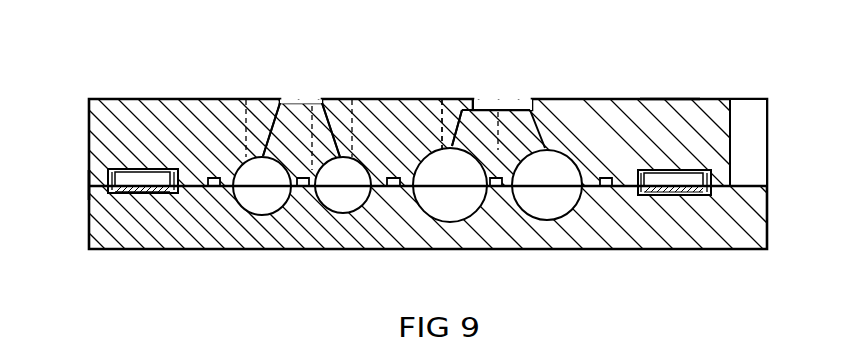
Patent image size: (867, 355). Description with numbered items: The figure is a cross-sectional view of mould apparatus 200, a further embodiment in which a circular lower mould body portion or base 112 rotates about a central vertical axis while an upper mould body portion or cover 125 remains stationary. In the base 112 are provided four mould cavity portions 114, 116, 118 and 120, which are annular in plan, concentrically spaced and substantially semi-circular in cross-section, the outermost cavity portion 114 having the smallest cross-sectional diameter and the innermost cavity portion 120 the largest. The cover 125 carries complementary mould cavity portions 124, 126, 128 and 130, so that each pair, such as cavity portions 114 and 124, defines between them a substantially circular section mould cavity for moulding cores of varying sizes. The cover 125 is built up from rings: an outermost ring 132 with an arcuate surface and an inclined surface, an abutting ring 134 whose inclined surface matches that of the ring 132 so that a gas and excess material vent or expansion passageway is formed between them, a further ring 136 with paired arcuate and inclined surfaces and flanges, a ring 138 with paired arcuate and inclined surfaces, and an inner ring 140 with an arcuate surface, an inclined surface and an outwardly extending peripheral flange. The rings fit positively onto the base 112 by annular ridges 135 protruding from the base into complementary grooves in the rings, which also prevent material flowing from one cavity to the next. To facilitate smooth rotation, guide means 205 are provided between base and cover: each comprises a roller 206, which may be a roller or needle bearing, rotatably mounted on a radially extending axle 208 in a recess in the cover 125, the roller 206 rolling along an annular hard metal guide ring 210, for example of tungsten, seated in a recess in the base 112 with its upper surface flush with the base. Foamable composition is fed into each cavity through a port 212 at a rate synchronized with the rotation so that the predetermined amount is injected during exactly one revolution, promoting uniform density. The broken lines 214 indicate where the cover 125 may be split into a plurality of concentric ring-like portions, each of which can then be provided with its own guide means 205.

The mould apparatus 200 is at (618, 38).
The outermost ring 132 is at (107, 123).
The lower mould body portion or base 112 is at (657, 227).
The guide means 205 is at (108, 155).
The mould cavity portion 124 is at (280, 102).
The mould cavity portion 130 is at (558, 160).
The mould cavity portion 114 is at (270, 200).
The mould cavity portion 116 is at (345, 200).
The mould cavity portion 118 is at (460, 207).
The mould cavity portion 120 is at (553, 210).
The broken lines 214 is at (303, 188).
The roller 206 is at (140, 177).
The inner ring 140 is at (698, 123).
The annular ridges 135 is at (217, 177).
The port 212 is at (240, 95).
The abutting ring 134 is at (262, 168).
The mould cavity portion 126 is at (352, 168).
The mould cavity portion 128 is at (461, 110).
The further ring 136 is at (434, 125).
The ring 138 is at (472, 135).
The upper mould body portion or cover 125 is at (656, 96).
The hard metal guide ring 210 is at (138, 198).
The axle 208 is at (98, 169).